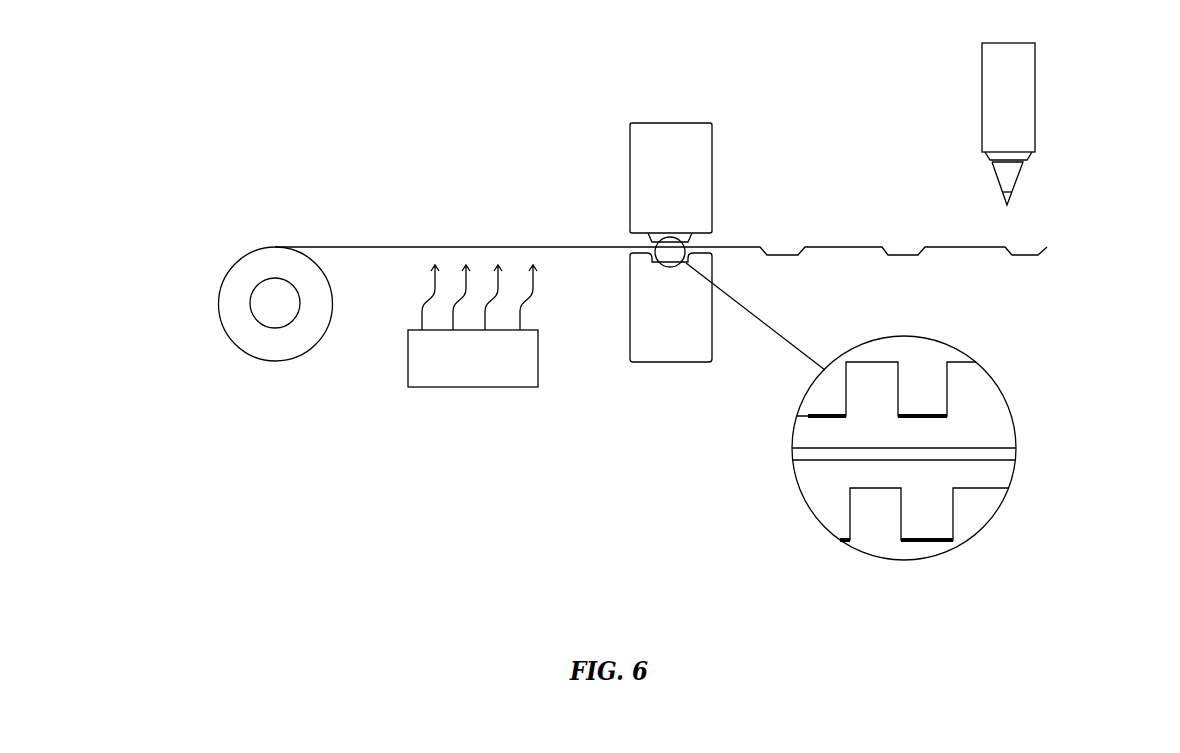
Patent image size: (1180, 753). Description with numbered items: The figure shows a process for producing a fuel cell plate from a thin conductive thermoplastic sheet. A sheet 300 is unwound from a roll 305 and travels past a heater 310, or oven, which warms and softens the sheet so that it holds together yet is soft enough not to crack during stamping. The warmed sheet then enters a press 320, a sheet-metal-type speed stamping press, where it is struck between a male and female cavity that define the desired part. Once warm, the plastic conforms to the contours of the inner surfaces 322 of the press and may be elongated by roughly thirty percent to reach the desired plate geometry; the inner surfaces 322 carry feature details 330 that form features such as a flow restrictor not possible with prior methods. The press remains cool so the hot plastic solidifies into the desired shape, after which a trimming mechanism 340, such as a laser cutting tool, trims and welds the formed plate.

The sheet 300 is at (358, 246).
The roll 305 is at (253, 247).
The heater 310 is at (470, 388).
The press 320 is at (629, 325).
The inner surfaces 322 is at (913, 398).
The feature details 330 is at (943, 537).
The trimming mechanism 340 is at (1044, 136).